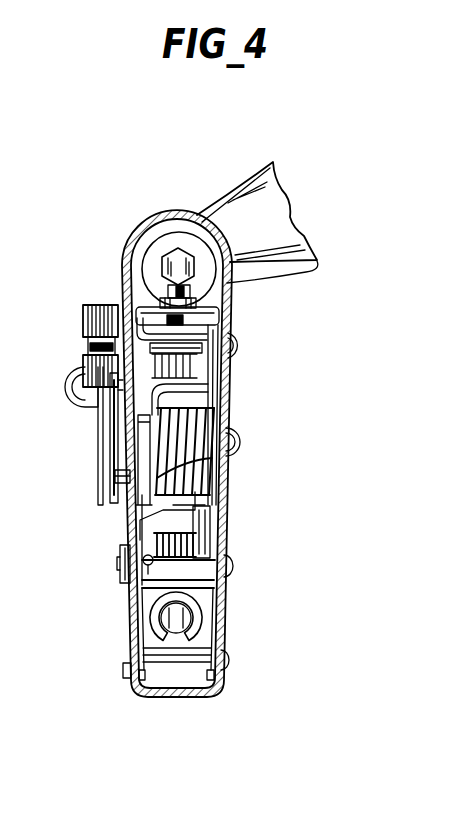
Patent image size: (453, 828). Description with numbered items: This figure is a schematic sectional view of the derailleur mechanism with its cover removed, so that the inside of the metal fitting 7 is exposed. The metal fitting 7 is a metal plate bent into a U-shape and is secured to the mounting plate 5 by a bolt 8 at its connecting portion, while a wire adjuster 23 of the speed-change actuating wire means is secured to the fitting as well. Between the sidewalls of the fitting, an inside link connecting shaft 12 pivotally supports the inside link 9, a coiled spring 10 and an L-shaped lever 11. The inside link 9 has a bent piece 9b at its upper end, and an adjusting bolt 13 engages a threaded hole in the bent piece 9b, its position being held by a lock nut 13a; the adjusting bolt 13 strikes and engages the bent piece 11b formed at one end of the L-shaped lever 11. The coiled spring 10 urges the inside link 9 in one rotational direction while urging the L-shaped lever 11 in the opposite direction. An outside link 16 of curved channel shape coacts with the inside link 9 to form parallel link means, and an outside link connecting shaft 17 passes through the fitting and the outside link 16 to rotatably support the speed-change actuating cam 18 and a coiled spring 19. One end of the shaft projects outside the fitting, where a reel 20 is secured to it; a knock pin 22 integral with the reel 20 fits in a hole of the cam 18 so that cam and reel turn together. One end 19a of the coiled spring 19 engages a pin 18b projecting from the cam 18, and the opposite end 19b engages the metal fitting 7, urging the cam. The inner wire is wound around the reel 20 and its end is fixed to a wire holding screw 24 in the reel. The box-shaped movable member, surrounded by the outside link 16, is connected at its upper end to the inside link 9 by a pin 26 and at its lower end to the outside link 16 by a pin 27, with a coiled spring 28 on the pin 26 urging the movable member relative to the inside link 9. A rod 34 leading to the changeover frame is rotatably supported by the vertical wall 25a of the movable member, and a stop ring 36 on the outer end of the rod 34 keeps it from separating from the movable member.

The mounting plate 5 is at (270, 185).
The metal fitting 7 is at (132, 240).
The bolt 8 is at (167, 236).
The inside link 9 is at (216, 322).
The bent piece 9b is at (125, 288).
The coiled spring 10 is at (176, 388).
The L-shaped lever 11 is at (150, 304).
The bent piece 11b is at (192, 342).
The inside link connecting shaft 12 is at (240, 347).
The adjusting bolt 13 is at (196, 280).
The lock nut 13a is at (205, 292).
The outside link 16 is at (131, 615).
The outside link connecting shaft 17 is at (240, 444).
The speed-change actuating cam 18 is at (135, 505).
The pin 18b is at (208, 466).
The coiled spring 19 is at (196, 500).
The end of coiled spring 19a is at (212, 500).
The opposite end of coiled spring 19b is at (102, 422).
The reel 20 is at (103, 448).
The knock pin 22 is at (129, 499).
The wire adjuster 23 is at (83, 318).
The wire holding screw 24 is at (65, 385).
The vertical wall 25a is at (148, 640).
The pin 26 is at (122, 570).
The pin 27 is at (227, 664).
The coiled spring 28 is at (196, 556).
The rod 34 is at (177, 620).
The stop ring 36 is at (201, 603).